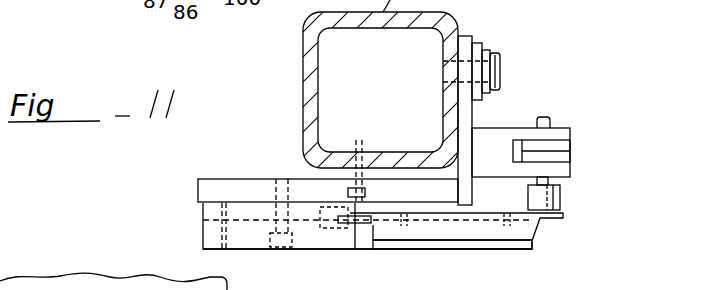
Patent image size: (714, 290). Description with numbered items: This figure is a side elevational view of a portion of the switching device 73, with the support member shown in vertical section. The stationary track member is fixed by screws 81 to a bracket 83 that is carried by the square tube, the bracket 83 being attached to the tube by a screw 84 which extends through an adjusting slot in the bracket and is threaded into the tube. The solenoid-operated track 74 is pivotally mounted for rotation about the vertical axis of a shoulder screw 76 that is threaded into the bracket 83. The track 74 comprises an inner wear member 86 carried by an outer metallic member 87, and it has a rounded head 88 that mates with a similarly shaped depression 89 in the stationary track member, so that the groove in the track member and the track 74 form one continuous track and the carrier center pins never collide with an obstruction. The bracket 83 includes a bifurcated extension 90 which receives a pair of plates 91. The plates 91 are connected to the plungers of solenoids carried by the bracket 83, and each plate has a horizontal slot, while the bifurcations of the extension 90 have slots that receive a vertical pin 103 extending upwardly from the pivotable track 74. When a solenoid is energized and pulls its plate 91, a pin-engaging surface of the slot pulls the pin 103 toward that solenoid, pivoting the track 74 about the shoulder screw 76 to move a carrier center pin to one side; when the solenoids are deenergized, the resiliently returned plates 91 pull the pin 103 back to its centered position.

The switching device 73 is at (522, 205).
The solenoid-operated track 74 is at (467, 252).
The shoulder screw 76 is at (361, 150).
The screws 81 is at (282, 248).
The bracket 83 is at (257, 178).
The screw 84 is at (500, 68).
The inner wear member 86 is at (532, 252).
The outer metallic member 87 is at (541, 226).
The rounded head 88 is at (363, 225).
The depression 89 is at (347, 231).
The bifurcated extension 90 is at (572, 131).
The plates 91 is at (571, 156).
The vertical pin 103 is at (538, 117).